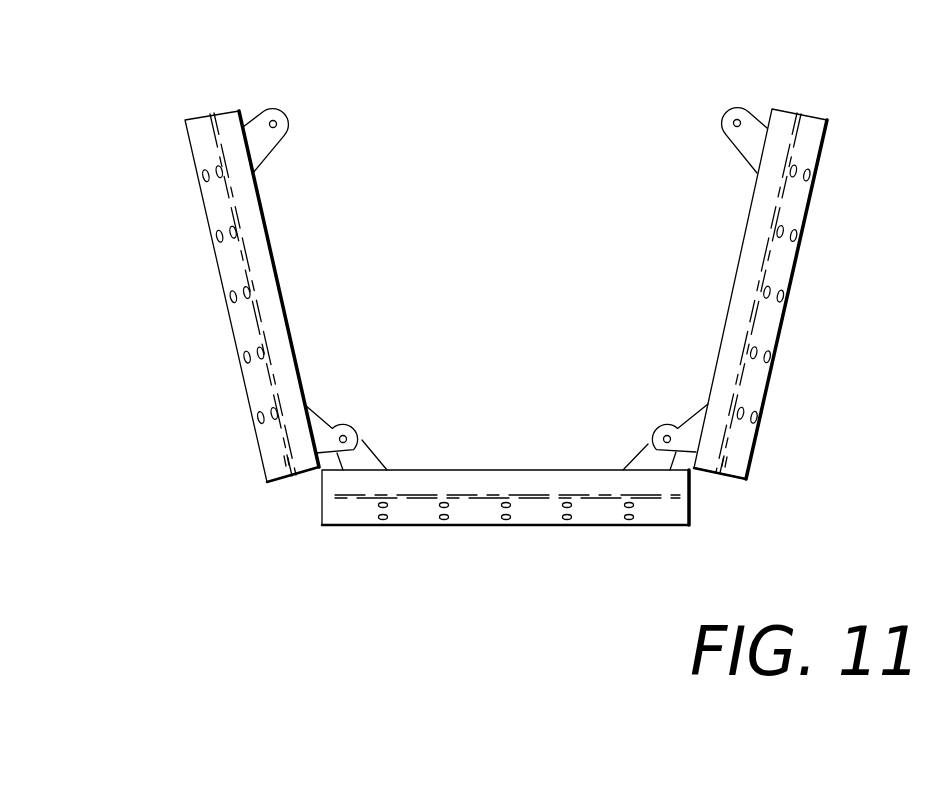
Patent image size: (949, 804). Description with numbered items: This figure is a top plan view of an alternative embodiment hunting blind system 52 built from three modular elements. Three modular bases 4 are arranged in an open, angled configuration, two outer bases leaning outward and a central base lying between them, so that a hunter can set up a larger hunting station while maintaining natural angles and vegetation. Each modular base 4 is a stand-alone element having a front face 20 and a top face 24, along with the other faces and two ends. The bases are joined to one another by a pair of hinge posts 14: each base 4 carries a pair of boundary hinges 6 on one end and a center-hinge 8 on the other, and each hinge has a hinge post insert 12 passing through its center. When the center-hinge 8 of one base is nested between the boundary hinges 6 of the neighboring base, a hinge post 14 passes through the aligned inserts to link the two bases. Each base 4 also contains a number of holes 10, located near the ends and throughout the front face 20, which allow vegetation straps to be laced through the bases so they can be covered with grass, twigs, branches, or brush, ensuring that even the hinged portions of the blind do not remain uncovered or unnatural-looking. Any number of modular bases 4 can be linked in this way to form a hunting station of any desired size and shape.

The hunting blind system 52 is at (104, 81).
The modular base 4 is at (168, 224).
The front face 20 is at (242, 327).
The top face 24 is at (258, 242).
The holes 10 is at (628, 508).
The boundary hinges 6 is at (737, 107).
The center-hinge 8 is at (275, 108).
The hinge post insert 12 is at (276, 122).
The hinge posts 14 is at (344, 435).